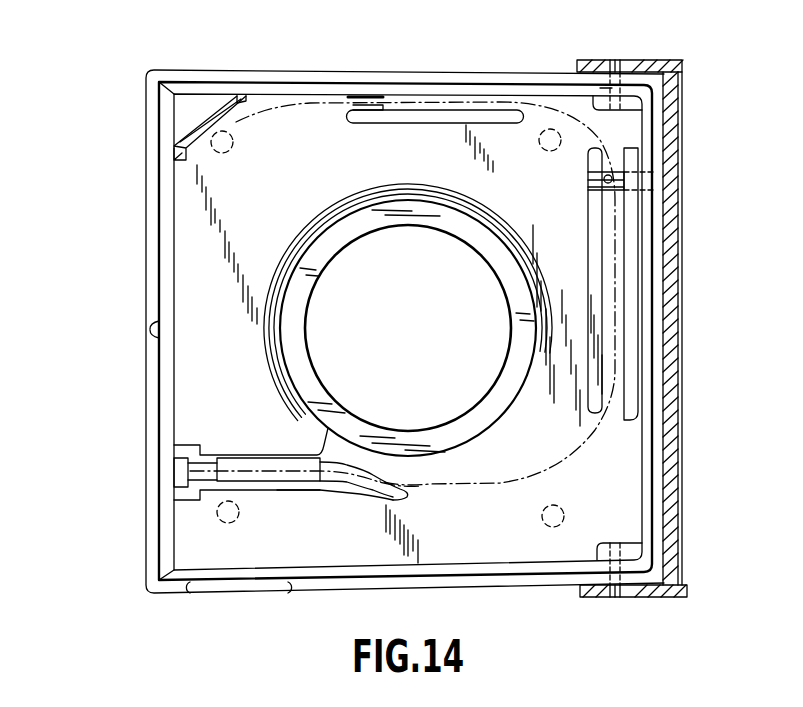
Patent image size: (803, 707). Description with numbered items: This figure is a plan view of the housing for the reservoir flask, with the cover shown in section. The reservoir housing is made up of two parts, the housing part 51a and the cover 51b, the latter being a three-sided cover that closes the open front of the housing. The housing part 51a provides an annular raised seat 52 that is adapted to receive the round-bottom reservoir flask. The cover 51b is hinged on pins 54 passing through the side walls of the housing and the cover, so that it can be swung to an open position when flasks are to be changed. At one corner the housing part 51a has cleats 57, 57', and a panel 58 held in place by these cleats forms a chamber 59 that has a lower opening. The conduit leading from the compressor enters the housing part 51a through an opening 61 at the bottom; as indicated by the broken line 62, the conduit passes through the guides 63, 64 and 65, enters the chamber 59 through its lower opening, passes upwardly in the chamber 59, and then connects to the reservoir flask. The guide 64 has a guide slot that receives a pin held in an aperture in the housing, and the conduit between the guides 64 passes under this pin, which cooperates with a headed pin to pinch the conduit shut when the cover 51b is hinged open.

The housing part 51a is at (160, 293).
The cover 51b is at (668, 326).
The annular raised seat 52 is at (356, 194).
The hinge pins 54 is at (580, 83).
The cleat 57 is at (162, 155).
The cleat 57' is at (268, 61).
The panel 58 is at (225, 105).
The chamber 59 is at (187, 117).
The opening 61 is at (168, 475).
The broken line 62 is at (581, 451).
The guide 63 is at (257, 455).
The guide 64 is at (631, 245).
The guide 65 is at (423, 118).